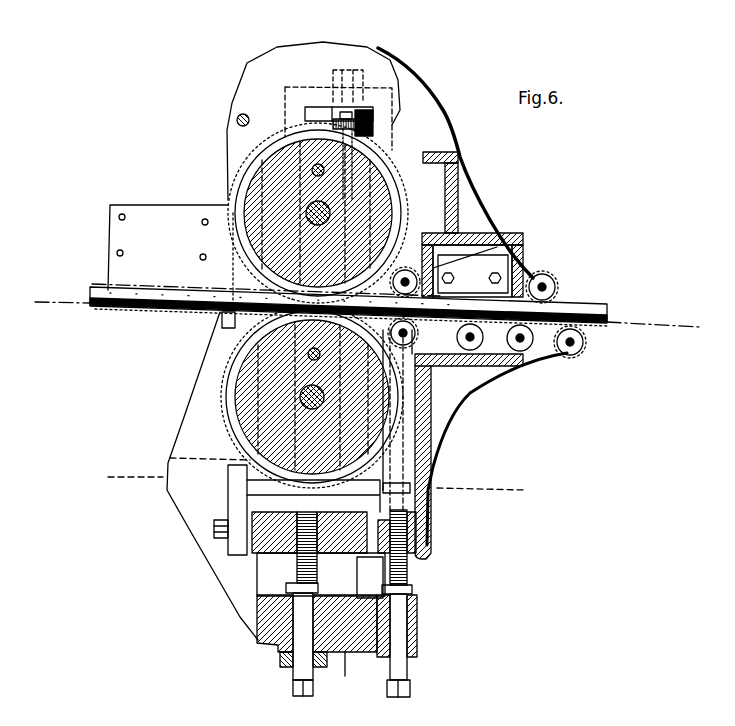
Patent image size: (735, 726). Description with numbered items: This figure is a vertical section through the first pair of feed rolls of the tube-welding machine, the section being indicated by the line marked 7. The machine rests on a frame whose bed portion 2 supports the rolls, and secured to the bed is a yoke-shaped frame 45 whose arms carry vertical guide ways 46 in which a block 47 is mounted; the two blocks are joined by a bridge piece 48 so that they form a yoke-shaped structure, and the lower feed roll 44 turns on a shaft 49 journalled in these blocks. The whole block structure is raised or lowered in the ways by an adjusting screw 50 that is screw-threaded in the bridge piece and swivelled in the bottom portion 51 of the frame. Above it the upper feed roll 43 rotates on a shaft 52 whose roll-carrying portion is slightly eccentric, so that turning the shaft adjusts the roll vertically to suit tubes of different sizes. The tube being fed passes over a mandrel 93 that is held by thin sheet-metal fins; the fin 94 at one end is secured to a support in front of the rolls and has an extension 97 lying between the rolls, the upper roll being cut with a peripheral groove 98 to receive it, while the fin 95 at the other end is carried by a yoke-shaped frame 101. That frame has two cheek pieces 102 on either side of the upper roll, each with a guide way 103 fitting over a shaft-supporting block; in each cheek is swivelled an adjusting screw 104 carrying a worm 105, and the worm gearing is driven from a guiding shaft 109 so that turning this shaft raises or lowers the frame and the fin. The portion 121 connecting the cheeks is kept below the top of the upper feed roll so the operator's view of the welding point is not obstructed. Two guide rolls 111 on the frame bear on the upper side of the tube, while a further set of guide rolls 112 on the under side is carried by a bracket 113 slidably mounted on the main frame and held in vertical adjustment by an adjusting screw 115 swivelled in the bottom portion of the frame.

The bed portion 2 is at (131, 475).
The section line 7 is at (362, 311).
The upper feed roll 43 is at (258, 174).
The lower feed roll 44 is at (240, 381).
The yoke-shaped frame 45 is at (187, 512).
The vertical guide ways 46 is at (260, 503).
The block 47 is at (245, 507).
The bridge piece 48 is at (260, 558).
The shaft 49 is at (303, 395).
The adjusting screw 50 is at (302, 618).
The bottom portion 51 is at (348, 674).
The shaft 52 is at (318, 208).
The mandrel 93 is at (153, 302).
The supporting fin 94 is at (173, 258).
The supporting fin 95 is at (493, 290).
The extension 97 is at (407, 238).
The peripheral groove 98 is at (390, 158).
The yoke-shaped frame 101 is at (482, 208).
The cheek piece 102 is at (444, 111).
The guide way 103 is at (380, 124).
The adjusting screw 104 is at (323, 85).
The worm 105 is at (369, 118).
The guiding shaft 109 is at (240, 117).
The guide rolls 111 is at (545, 277).
The guide rolls 112 is at (565, 354).
The bracket 113 is at (440, 423).
The adjusting screw 115 is at (412, 571).
The connecting portion 121 is at (462, 165).